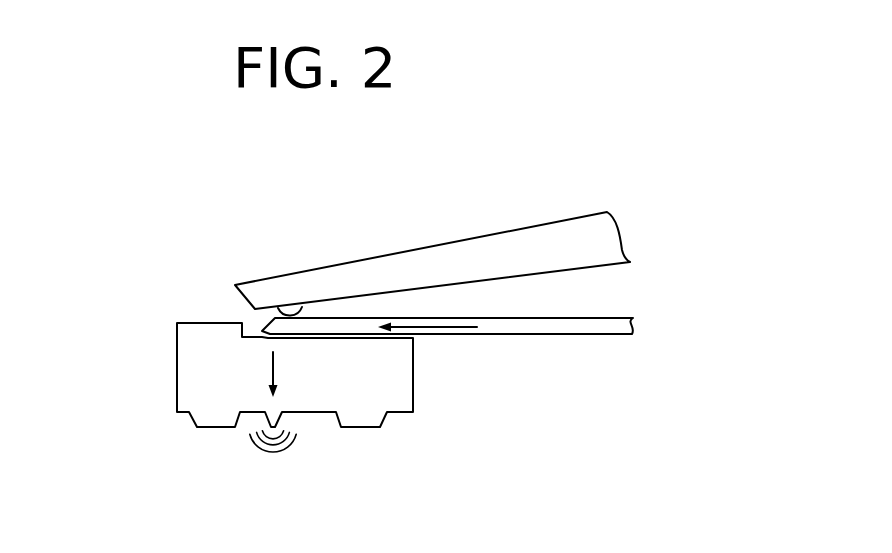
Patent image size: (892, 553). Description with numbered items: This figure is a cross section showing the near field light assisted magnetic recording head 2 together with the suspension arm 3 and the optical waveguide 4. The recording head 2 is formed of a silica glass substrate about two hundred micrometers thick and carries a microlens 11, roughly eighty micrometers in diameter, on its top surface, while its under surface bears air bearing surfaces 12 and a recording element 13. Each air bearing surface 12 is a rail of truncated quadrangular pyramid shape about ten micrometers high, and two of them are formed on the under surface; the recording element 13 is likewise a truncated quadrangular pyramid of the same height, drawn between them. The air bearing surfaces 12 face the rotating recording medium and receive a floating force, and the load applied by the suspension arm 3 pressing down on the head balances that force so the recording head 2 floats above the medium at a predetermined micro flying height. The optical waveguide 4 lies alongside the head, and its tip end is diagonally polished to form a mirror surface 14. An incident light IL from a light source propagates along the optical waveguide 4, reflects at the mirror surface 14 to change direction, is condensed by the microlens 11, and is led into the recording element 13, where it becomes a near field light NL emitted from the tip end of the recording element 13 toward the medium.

The near field light assisted magnetic recording head 2 is at (177, 333).
The suspension arm 3 is at (407, 267).
The optical waveguide 4 is at (497, 328).
The microlens 11 is at (262, 337).
The air bearing surface 12 is at (197, 424).
The recording element 13 is at (268, 420).
The mirror surface 14 is at (263, 332).
The near field light NL is at (273, 450).
The incident light IL is at (275, 368).